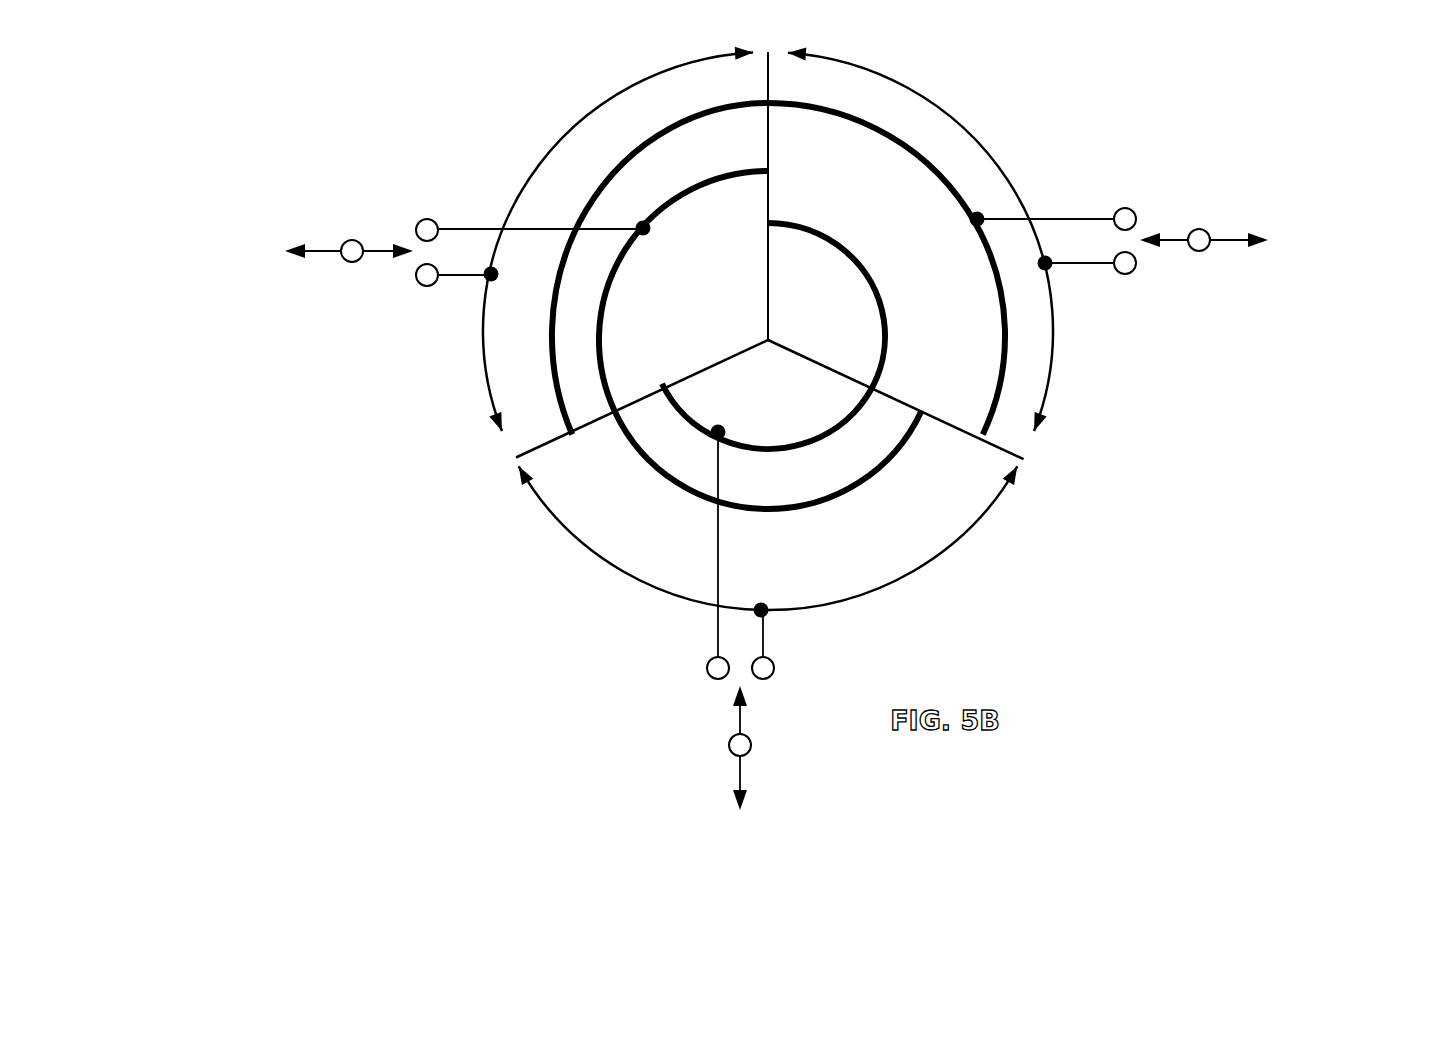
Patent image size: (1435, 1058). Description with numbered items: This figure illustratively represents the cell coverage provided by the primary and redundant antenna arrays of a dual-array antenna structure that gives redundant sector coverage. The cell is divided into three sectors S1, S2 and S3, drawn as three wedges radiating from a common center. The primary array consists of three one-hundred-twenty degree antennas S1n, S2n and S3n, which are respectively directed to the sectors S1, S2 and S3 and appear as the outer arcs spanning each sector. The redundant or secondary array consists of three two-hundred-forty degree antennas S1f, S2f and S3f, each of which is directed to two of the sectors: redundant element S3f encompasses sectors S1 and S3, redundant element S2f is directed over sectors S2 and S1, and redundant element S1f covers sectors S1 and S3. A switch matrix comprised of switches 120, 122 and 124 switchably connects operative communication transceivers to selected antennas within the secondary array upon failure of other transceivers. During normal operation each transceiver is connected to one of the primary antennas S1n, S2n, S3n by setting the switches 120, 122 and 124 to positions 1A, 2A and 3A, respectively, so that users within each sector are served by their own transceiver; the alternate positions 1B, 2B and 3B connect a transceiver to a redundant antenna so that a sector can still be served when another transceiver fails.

The switch 120 is at (1202, 229).
The switch 122 is at (689, 653).
The switch 124 is at (384, 261).
The switch position 1A is at (1119, 276).
The switch position 1B is at (1116, 209).
The switch position 2A is at (773, 660).
The switch position 2B is at (708, 662).
The switch position 3A is at (436, 285).
The switch position 3B is at (436, 219).
The sector S1 is at (896, 255).
The sector S2 is at (671, 450).
The sector S3 is at (678, 277).
The primary antenna S1n is at (885, 72).
The redundant antenna S1f is at (980, 230).
The primary antenna S2n is at (600, 562).
The redundant antenna S2f is at (777, 452).
The primary antenna S3n is at (627, 85).
The redundant antenna S3f is at (752, 171).